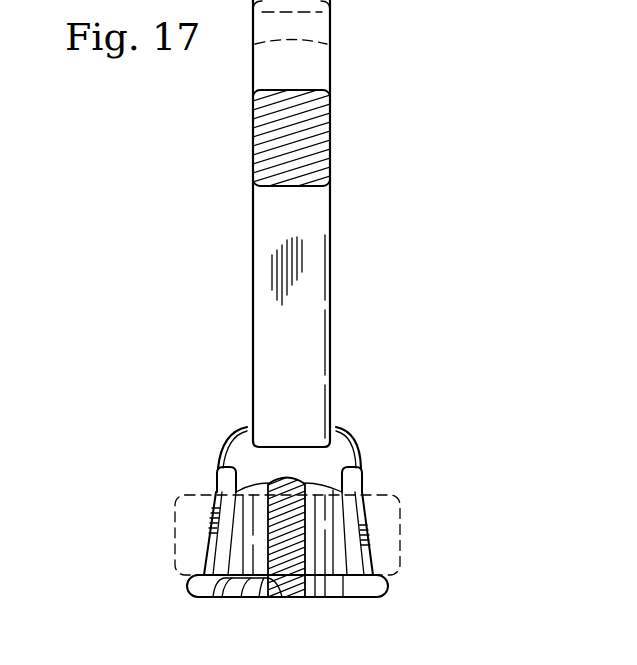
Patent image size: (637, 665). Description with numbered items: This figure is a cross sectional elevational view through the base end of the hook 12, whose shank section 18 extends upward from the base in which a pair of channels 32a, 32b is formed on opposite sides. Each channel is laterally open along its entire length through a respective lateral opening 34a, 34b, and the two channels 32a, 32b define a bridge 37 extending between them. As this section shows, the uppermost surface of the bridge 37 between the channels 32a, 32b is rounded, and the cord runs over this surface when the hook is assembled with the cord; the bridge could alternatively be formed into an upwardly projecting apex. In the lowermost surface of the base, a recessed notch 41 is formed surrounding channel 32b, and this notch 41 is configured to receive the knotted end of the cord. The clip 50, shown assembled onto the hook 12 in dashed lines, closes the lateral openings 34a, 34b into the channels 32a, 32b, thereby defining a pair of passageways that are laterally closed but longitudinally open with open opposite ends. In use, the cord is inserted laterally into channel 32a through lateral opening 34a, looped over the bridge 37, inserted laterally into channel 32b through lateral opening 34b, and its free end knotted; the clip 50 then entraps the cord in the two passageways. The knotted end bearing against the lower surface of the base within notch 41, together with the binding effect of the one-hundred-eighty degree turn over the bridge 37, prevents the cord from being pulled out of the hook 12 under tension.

The hook 12 is at (408, 48).
The shank section 18 is at (320, 202).
The bridge 37 is at (287, 480).
The lateral opening 34a is at (362, 558).
The lateral opening 34b is at (207, 558).
The clip 50 is at (388, 495).
The recessed notch 41 is at (257, 597).
The channel 32a is at (341, 598).
The channel 32b is at (248, 598).